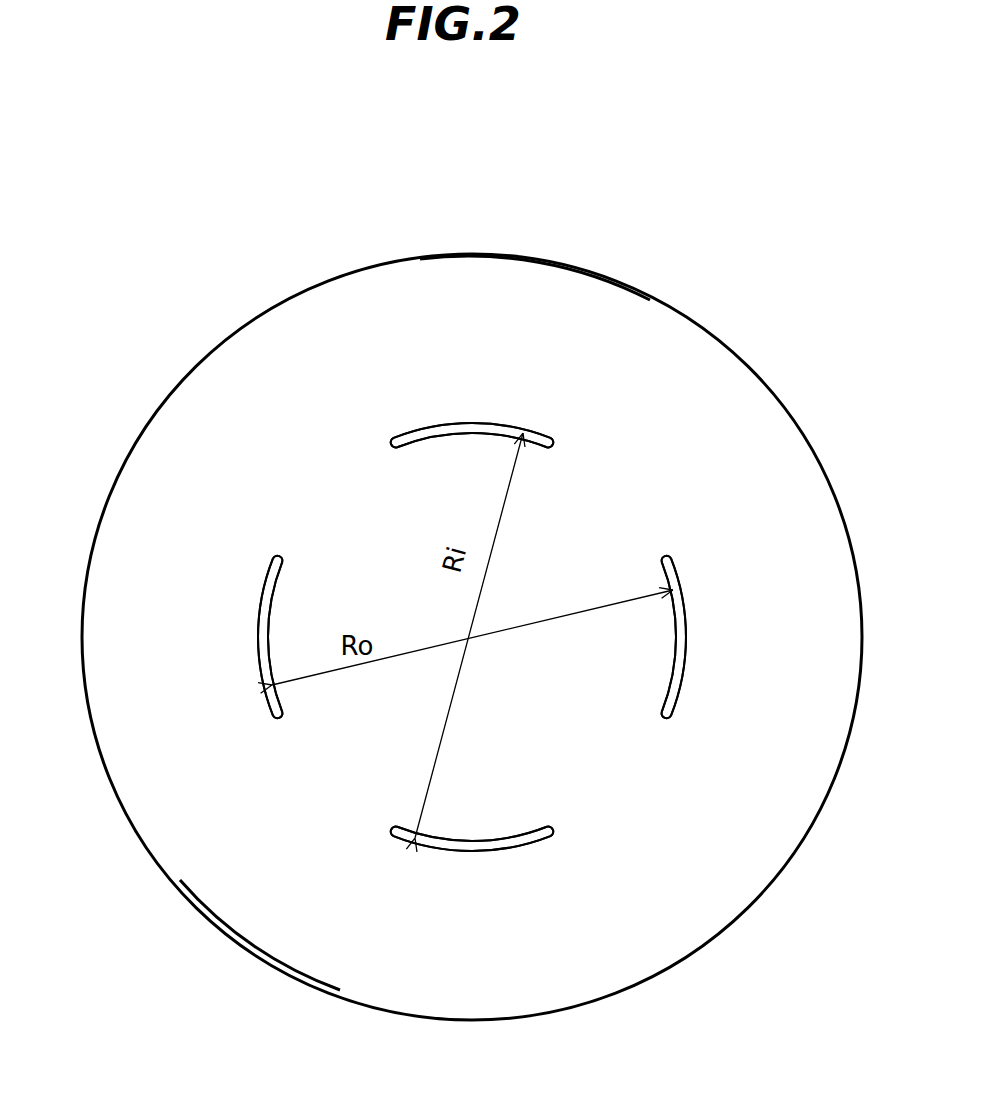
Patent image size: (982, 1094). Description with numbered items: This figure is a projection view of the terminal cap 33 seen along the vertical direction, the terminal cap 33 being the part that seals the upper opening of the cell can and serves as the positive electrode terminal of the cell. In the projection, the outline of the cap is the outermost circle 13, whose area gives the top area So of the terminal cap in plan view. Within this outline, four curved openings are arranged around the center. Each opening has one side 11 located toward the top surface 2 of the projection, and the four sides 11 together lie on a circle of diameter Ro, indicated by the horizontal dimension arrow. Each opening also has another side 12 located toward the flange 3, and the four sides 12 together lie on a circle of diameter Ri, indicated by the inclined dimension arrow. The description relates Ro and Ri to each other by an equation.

The top surface 2 is at (370, 733).
The flange 3 is at (173, 733).
The side of opening (top surface side) 11 is at (438, 440).
The side of opening (flange side) 12 is at (470, 423).
The outermost circle 13 is at (260, 958).
The terminal cap 33 is at (575, 266).